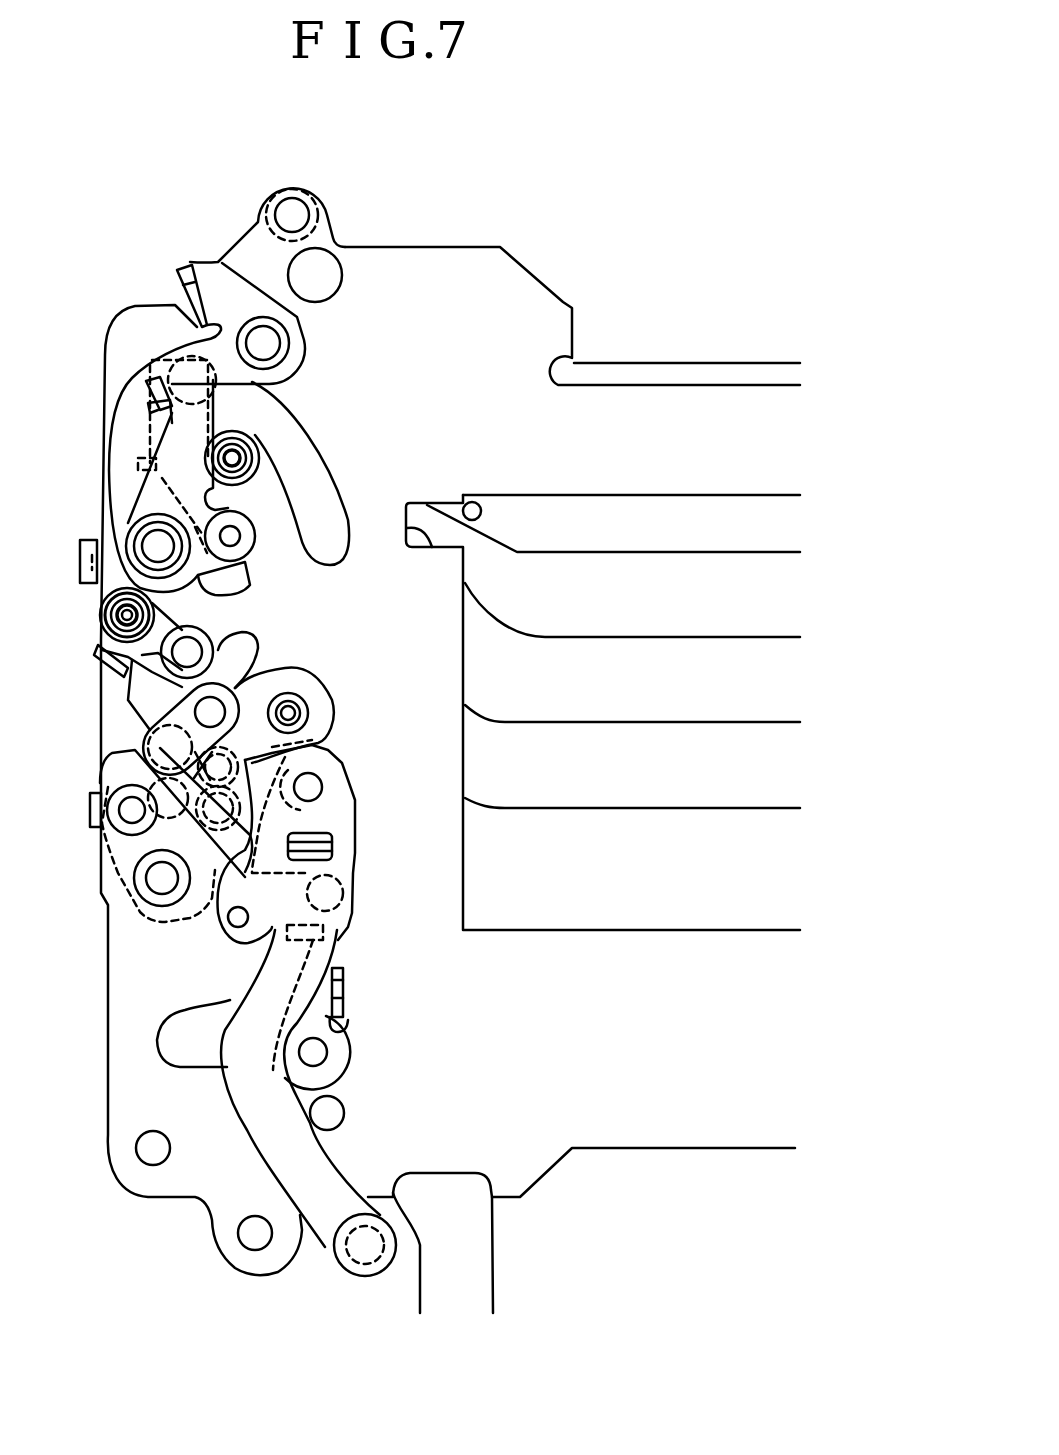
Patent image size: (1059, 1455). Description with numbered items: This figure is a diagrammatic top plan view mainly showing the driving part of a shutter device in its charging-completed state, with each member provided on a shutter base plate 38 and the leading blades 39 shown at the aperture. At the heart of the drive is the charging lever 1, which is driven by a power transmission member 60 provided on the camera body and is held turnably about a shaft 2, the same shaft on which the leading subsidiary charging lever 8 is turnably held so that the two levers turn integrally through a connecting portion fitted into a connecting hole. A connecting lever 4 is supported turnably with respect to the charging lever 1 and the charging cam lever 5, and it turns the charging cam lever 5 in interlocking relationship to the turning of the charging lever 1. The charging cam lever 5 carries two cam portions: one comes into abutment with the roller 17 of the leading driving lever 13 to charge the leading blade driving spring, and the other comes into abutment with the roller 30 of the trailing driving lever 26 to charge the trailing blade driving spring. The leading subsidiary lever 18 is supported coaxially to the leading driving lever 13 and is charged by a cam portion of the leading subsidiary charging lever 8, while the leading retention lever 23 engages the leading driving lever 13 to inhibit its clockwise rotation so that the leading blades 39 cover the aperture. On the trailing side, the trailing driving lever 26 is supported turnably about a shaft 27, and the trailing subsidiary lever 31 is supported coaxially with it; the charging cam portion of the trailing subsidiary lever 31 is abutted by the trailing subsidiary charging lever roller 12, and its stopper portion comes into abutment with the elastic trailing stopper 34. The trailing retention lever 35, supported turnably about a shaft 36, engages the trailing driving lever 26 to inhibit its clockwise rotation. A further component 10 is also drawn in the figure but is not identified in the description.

The charging lever 1 is at (342, 857).
The shaft 2 is at (318, 787).
The connecting lever 4 is at (195, 708).
The charging cam lever 5 is at (333, 703).
The leading subsidiary charging lever 8 is at (215, 930).
The roller 10 is at (103, 650).
The trailing subsidiary charging lever roller 12 is at (215, 630).
The leading driving lever 13 is at (128, 870).
The leading driving lever roller 17 is at (113, 806).
The leading subsidiary lever 18 is at (113, 758).
The leading retention lever 23 is at (325, 1005).
The trailing driving lever 26 is at (190, 428).
The shaft 27 is at (140, 515).
The trailing driving lever roller 30 is at (252, 553).
The trailing subsidiary lever 31 is at (127, 437).
The trailing stopper 34 is at (258, 482).
The trailing retention lever 35 is at (202, 260).
The shaft 36 is at (270, 342).
The shutter base plate 38 is at (520, 295).
The leading blades 39 is at (597, 930).
The power transmission member 60 is at (443, 1180).